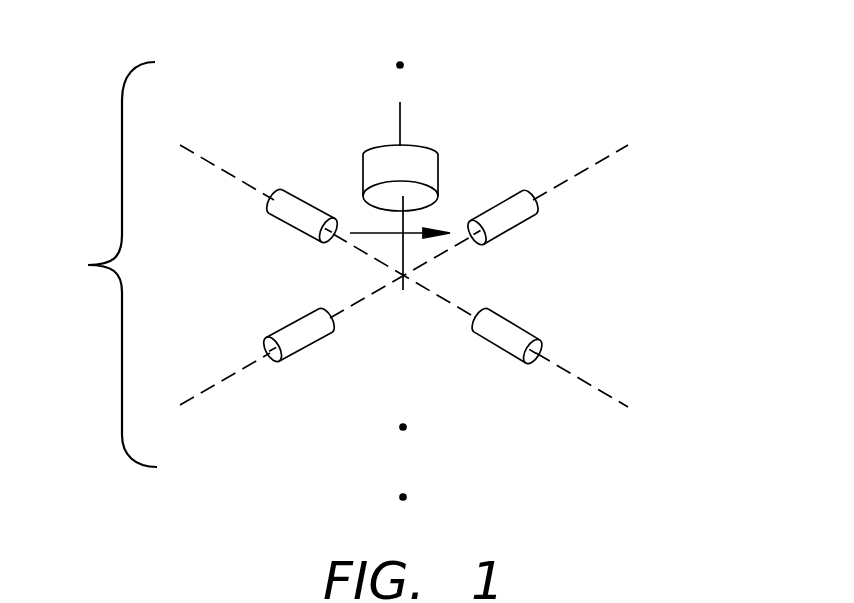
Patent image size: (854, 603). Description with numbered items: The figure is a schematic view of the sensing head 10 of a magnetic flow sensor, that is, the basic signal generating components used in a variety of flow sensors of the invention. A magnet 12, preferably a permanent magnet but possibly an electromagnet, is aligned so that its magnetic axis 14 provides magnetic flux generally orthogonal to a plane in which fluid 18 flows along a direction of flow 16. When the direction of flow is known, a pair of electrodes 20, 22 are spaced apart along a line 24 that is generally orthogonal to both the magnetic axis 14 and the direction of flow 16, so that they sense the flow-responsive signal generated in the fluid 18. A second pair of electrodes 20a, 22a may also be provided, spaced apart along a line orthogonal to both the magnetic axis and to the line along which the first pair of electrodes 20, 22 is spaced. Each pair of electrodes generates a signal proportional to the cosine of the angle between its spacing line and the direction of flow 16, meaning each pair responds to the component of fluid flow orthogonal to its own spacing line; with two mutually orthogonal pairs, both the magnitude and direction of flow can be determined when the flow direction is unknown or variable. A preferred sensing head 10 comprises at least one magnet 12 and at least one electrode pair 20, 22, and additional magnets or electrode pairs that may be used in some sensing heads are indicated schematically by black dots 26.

The sensing head 10 is at (93, 264).
The magnet 12 is at (363, 168).
The magnetic axis 14 is at (400, 125).
The direction of flow 16 is at (460, 243).
The fluid 18 is at (650, 342).
The electrode 20 is at (522, 225).
The electrode 20a is at (500, 343).
The electrode 22 is at (300, 325).
The electrode 22a is at (307, 229).
The line 24 is at (403, 290).
The black dots 26 is at (400, 65).